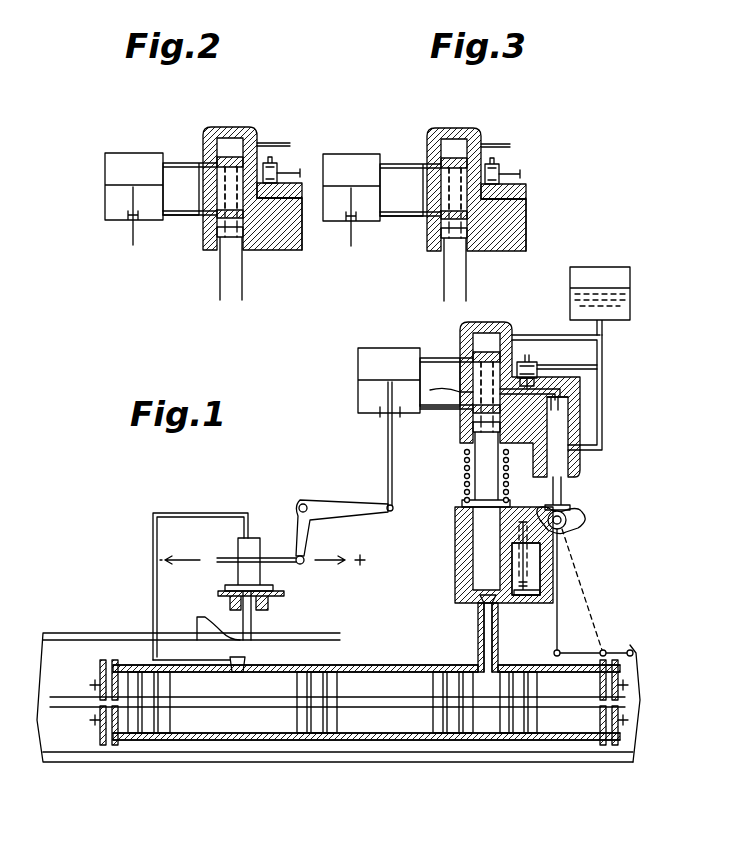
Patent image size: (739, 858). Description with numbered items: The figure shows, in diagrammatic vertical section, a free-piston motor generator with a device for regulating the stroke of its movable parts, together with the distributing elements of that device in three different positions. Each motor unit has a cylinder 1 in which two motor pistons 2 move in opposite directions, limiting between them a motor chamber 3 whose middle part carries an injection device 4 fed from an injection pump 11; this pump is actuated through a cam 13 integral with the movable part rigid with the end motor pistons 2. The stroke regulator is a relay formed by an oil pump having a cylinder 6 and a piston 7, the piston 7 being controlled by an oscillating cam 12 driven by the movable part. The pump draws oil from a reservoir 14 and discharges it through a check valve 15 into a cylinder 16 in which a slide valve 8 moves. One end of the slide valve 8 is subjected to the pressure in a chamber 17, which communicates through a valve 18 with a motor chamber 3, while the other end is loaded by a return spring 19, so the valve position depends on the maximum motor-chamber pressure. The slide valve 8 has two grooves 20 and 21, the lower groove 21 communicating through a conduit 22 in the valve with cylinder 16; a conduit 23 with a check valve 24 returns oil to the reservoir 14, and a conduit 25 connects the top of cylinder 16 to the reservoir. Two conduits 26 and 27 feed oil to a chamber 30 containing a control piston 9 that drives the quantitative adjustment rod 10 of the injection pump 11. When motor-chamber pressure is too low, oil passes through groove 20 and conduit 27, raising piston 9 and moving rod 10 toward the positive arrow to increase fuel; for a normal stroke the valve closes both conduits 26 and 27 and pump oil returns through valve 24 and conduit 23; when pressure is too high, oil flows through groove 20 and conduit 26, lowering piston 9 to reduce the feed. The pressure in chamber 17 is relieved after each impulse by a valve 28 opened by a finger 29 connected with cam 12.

In FIG. 1, the cylinder 1 is at (240, 745).
In FIG. 1, the motor pistons 2 is at (88, 725).
In FIG. 1, the motor chamber 3 is at (280, 720).
In FIG. 1, the injection device 4 is at (258, 662).
In FIG. 1, the cylinder 6 is at (582, 445).
In FIG. 1, the piston 7 is at (562, 490).
In FIG. 2, the slide valve 8 is at (239, 150).
In FIG. 3, the slide valve 8 is at (465, 152).
In FIG. 1, the slide valve 8 is at (494, 352).
In FIG. 2, the control piston 9 is at (118, 199).
In FIG. 3, the control piston 9 is at (351, 179).
In FIG. 1, the control piston 9 is at (370, 380).
In FIG. 1, the quantitative adjustment rod 10 is at (274, 552).
In FIG. 1, the injection pump 11 is at (244, 556).
In FIG. 1, the oscillating cam 12 is at (570, 520).
In FIG. 1, the cam 13 is at (202, 618).
In FIG. 1, the reservoir 14 is at (602, 292).
In FIG. 1, the check valve 15 is at (575, 392).
In FIG. 2, the cylinder 16 is at (241, 167).
In FIG. 3, the cylinder 16 is at (470, 166).
In FIG. 1, the cylinder 16 is at (478, 342).
In FIG. 1, the chamber 17 is at (470, 590).
In FIG. 1, the valve 18 is at (480, 600).
In FIG. 1, the return spring 19 is at (464, 480).
In FIG. 2, the groove 20 is at (301, 154).
In FIG. 3, the groove 20 is at (452, 204).
In FIG. 1, the groove 20 is at (451, 379).
In FIG. 2, the lower groove 21 is at (251, 263).
In FIG. 3, the lower groove 21 is at (436, 259).
In FIG. 1, the lower groove 21 is at (462, 438).
In FIG. 2, the conduit 22 is at (206, 226).
In FIG. 3, the conduit 22 is at (515, 166).
In FIG. 1, the conduit 22 is at (470, 418).
In FIG. 2, the conduit 23 is at (291, 225).
In FIG. 3, the conduit 23 is at (533, 188).
In FIG. 1, the conduit 23 is at (568, 368).
In FIG. 2, the check valve 24 is at (301, 159).
In FIG. 3, the check valve 24 is at (537, 168).
In FIG. 1, the check valve 24 is at (534, 364).
In FIG. 2, the conduit 25 is at (283, 123).
In FIG. 3, the conduit 25 is at (516, 118).
In FIG. 1, the conduit 25 is at (555, 336).
In FIG. 2, the conduit 26 is at (186, 160).
In FIG. 3, the conduit 26 is at (404, 158).
In FIG. 1, the conduit 26 is at (440, 358).
In FIG. 2, the conduit 27 is at (185, 230).
In FIG. 3, the conduit 27 is at (403, 242).
In FIG. 1, the conduit 27 is at (440, 410).
In FIG. 1, the valve 28 is at (545, 578).
In FIG. 1, the finger 29 is at (544, 508).
In FIG. 1, the chamber 30 is at (374, 352).